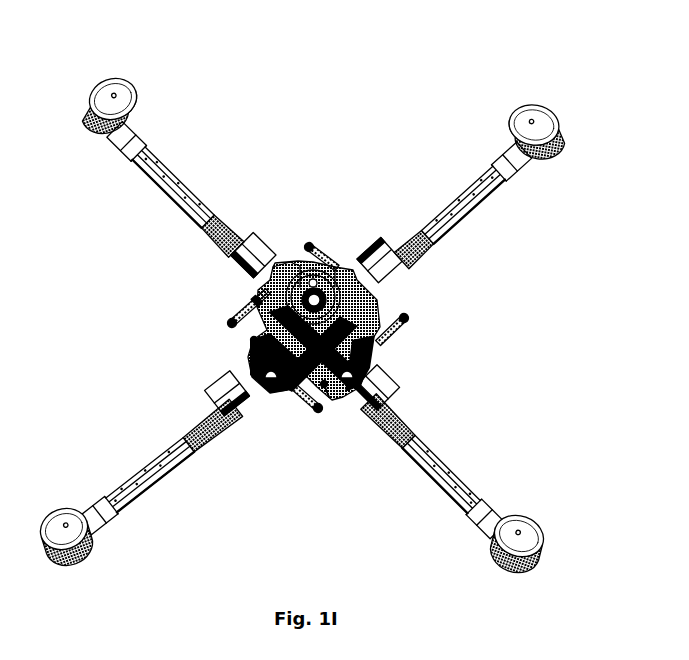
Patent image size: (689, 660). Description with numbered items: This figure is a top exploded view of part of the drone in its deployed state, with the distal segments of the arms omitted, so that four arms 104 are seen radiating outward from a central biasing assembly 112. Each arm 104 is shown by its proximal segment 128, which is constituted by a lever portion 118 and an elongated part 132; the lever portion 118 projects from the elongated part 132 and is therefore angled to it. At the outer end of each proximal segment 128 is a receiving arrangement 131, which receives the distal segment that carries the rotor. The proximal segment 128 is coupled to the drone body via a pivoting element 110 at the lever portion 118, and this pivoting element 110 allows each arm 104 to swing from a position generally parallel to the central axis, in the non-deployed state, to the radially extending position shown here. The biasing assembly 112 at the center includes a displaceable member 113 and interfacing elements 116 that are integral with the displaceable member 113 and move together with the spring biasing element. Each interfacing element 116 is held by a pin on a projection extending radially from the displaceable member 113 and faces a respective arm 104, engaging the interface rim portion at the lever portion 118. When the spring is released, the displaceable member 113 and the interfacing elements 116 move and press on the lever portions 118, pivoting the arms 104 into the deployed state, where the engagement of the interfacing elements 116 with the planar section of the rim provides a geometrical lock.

The arm 104 is at (337, 306).
The proximal segment 128 is at (463, 204).
The lever portion 118 is at (396, 252).
The biasing assembly 112 is at (268, 379).
The receiving arrangement 131 is at (560, 148).
The elongated part 132 is at (475, 193).
The pivoting element 110 is at (408, 336).
The displaceable member 113 is at (327, 392).
The interfacing element 116 is at (273, 393).